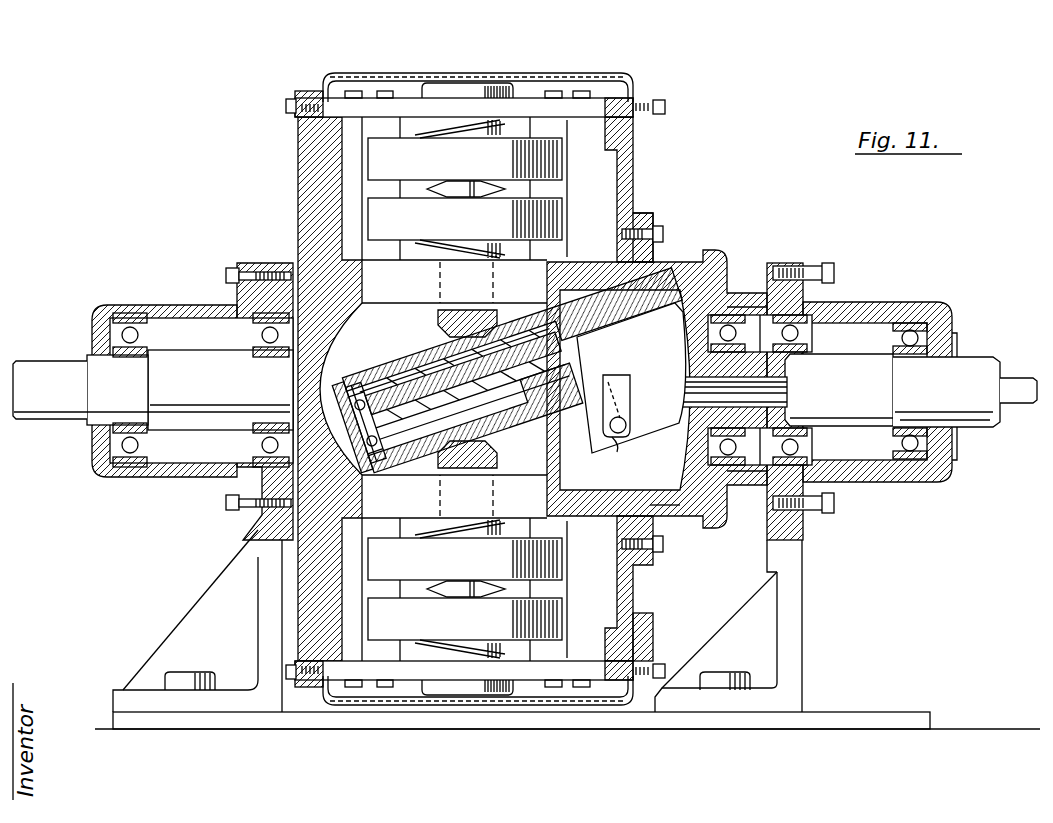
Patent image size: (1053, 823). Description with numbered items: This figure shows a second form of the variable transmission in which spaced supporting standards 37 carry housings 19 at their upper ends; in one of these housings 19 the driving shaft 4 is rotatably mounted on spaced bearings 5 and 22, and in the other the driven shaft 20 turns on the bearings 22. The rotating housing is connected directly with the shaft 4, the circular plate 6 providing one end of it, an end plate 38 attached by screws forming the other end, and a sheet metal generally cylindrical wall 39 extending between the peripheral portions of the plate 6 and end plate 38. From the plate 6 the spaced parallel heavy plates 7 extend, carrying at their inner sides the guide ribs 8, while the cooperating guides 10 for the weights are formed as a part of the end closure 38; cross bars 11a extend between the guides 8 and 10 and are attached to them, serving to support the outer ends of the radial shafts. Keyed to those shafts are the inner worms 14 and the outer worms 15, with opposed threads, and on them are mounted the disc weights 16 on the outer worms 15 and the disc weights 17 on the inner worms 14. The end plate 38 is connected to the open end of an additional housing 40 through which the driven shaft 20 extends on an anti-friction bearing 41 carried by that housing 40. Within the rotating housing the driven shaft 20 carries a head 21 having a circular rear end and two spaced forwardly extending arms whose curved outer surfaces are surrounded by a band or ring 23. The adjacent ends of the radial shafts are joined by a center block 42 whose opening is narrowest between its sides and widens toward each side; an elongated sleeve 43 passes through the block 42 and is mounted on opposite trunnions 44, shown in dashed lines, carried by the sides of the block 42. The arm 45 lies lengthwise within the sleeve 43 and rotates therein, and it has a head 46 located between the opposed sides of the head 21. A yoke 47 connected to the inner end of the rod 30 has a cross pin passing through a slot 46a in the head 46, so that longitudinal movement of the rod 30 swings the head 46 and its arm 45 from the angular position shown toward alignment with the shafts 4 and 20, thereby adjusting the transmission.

The drive shaft 4 is at (205, 410).
The bearing 5 is at (214, 480).
The circular plate 6 is at (310, 588).
The plates 7 is at (410, 296).
The guide ribs 8 is at (367, 190).
The guide ribs 10 is at (557, 185).
The cross bars 11a is at (508, 106).
The worms 14 is at (469, 252).
The worms 15 is at (470, 118).
The disc weights 16 is at (412, 170).
The disc weights 17 is at (418, 230).
The housings 19 is at (172, 473).
The driven shaft 20 is at (850, 365).
The head 21 is at (727, 280).
The anti-friction bearings 22 is at (108, 477).
The band or ring 23 is at (663, 502).
The rod 30 is at (1018, 403).
The supporting standards 37 is at (263, 583).
The end plate 38 is at (638, 216).
The cover 39 is at (590, 75).
The additional housing 40 is at (736, 268).
The anti-friction bearing 41 is at (738, 464).
The center block 42 is at (444, 349).
The elongated sleeve 43 is at (534, 412).
The trunnions 44 is at (395, 360).
The arm 45 is at (407, 430).
The head 46 is at (635, 305).
The slot 46a is at (670, 481).
The yoke 47 is at (622, 383).